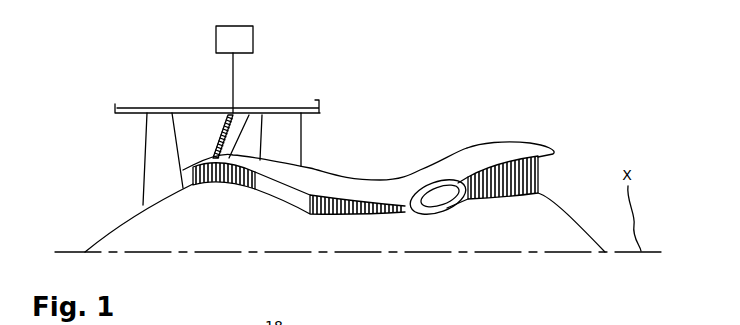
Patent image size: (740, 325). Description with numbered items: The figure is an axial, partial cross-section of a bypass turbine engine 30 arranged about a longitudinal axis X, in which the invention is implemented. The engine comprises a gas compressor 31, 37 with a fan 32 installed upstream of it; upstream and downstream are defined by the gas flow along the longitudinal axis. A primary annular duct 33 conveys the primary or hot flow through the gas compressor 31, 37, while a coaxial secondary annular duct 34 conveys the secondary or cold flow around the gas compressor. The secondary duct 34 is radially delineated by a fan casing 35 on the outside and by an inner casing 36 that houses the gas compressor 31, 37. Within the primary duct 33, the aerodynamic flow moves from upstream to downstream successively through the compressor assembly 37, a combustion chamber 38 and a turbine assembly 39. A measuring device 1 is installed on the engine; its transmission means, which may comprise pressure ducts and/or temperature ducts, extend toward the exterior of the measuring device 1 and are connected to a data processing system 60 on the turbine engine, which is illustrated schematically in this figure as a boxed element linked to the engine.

The measuring device 1 is at (241, 124).
The bypass turbine engine 30 is at (428, 91).
The gas compressor 31 is at (356, 186).
The fan 32 is at (132, 160).
The primary annular duct 33 is at (283, 201).
The secondary annular duct 34 is at (196, 126).
The fan casing 35 is at (212, 108).
The inner casing 36 is at (280, 165).
The compressor assembly 37 is at (222, 192).
The combustion chamber 38 is at (440, 200).
The turbine assembly 39 is at (464, 163).
The data processing system 60 is at (233, 92).